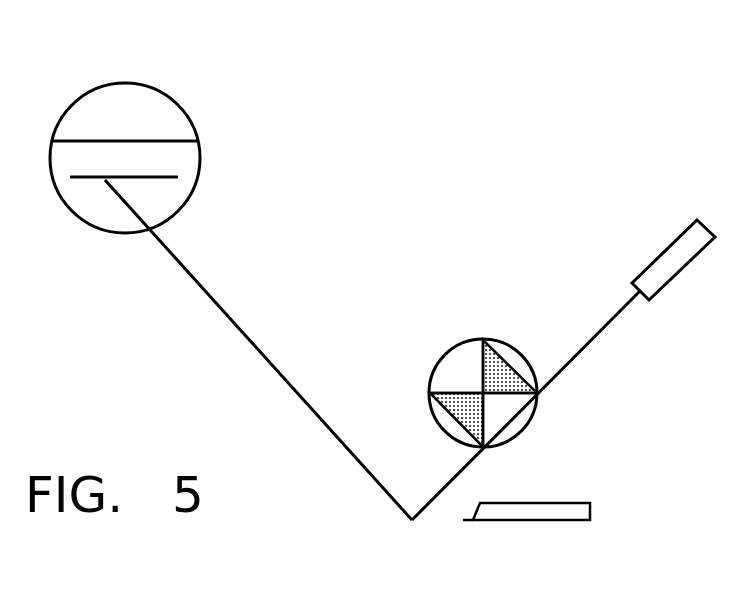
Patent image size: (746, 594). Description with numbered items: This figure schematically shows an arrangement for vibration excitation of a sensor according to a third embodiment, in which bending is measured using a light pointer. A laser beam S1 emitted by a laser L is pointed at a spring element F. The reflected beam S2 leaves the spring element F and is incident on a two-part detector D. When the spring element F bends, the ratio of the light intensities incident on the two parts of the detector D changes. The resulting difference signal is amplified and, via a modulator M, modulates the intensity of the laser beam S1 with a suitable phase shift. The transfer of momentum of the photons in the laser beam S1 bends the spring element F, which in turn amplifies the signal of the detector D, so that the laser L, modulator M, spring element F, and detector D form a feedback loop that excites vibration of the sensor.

The two-part detector D is at (142, 85).
The reflected beam S2 is at (258, 350).
The laser beam S1 is at (526, 405).
The modulator M is at (508, 340).
The laser L is at (662, 250).
The spring element F is at (524, 523).